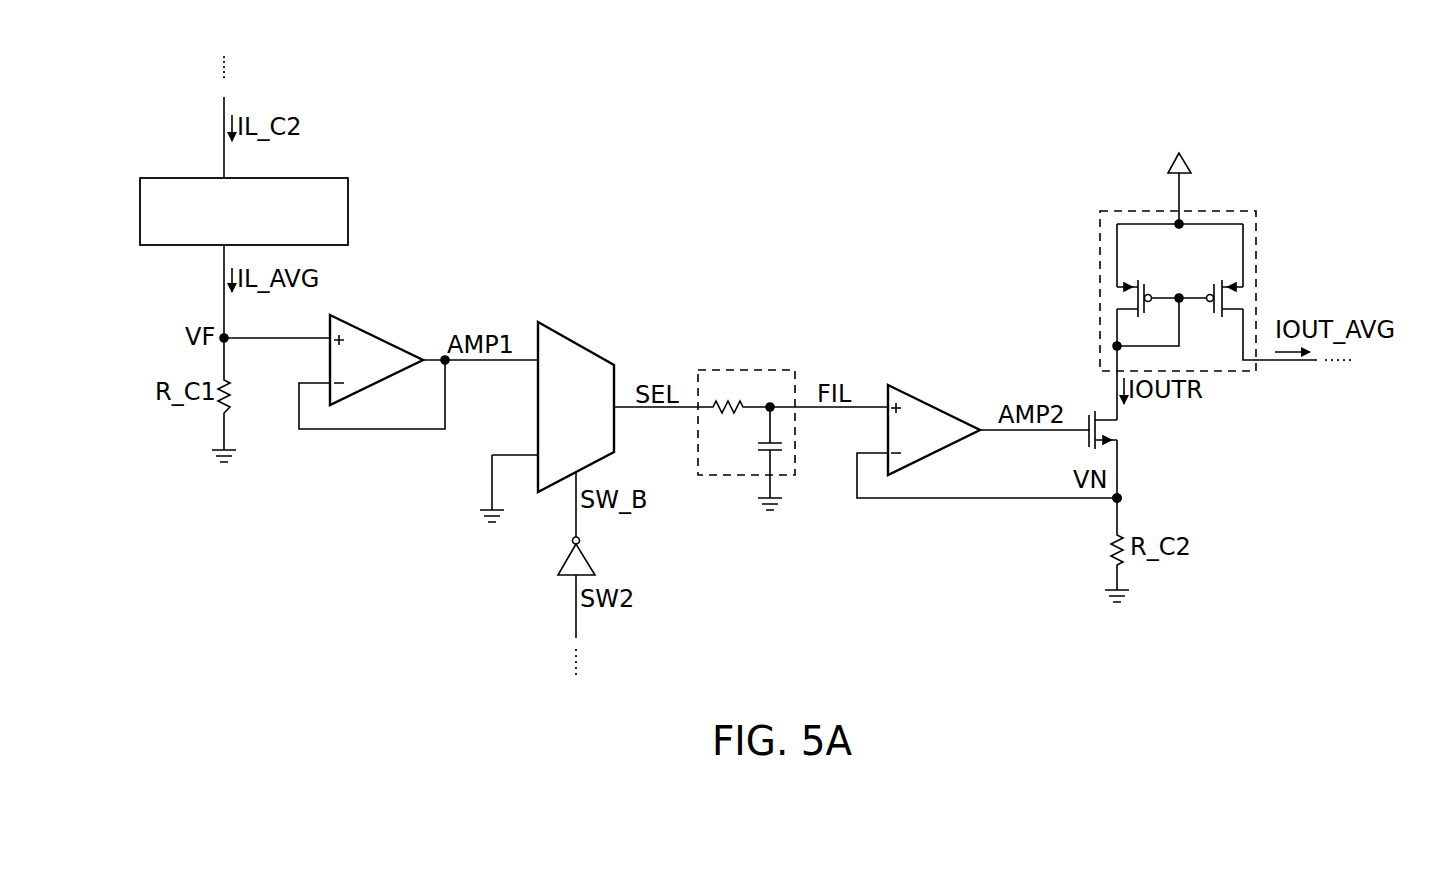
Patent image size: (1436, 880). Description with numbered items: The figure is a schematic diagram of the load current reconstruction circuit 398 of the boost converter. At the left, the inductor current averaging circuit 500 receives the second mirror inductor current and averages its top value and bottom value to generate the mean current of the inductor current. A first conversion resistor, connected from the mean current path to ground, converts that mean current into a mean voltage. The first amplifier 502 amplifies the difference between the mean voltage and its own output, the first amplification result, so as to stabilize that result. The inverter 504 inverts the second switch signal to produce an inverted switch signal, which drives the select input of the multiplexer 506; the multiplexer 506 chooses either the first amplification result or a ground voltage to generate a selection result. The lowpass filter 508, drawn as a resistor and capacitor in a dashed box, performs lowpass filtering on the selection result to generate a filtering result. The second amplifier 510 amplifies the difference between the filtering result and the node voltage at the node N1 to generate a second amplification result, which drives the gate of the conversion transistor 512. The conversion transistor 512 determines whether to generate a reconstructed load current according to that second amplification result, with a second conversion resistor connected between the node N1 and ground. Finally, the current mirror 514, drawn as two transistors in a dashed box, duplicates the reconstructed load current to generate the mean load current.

The load current reconstruction circuit 398 is at (1152, 68).
The inductor current averaging circuit 500 is at (190, 178).
The first amplifier 502 is at (376, 337).
The inverter 504 is at (586, 558).
The multiplexer 506 is at (578, 345).
The lowpass filter 508 is at (733, 368).
The second amplifier 510 is at (933, 403).
The conversion transistor 512 is at (1103, 413).
The current mirror 514 is at (1233, 210).
The node N1 is at (1121, 496).